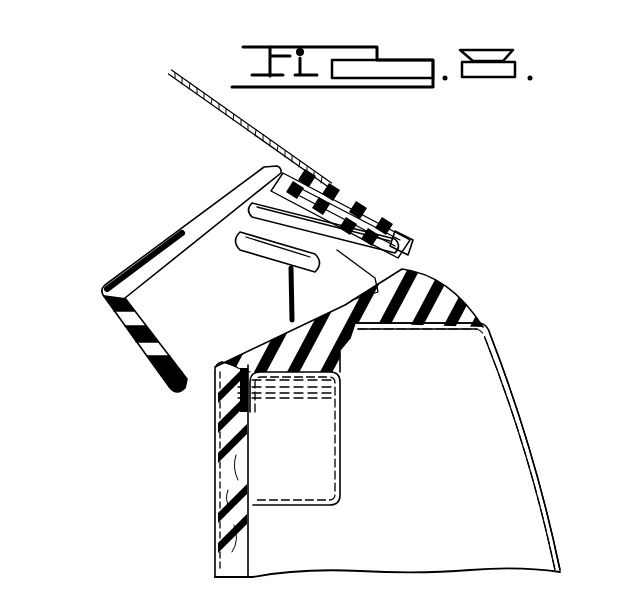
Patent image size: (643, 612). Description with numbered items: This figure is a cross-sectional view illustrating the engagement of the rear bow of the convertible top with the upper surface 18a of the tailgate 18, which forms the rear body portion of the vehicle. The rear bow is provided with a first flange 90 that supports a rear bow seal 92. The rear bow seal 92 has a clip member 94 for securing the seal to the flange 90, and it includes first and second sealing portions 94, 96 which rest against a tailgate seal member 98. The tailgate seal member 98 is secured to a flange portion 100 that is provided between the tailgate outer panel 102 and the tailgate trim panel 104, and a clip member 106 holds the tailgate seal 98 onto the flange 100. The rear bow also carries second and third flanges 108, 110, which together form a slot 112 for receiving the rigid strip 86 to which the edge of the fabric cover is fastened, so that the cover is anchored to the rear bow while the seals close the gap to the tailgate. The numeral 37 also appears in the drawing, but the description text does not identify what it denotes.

The tailgate 18 is at (537, 457).
The top portion of tailgate 18a is at (426, 338).
The cover plate 37 is at (206, 222).
The rigid plastic strip 86 is at (385, 220).
The first flange 90 is at (270, 268).
The rear bow seal 92 is at (283, 283).
The clip member 94 is at (427, 258).
The second sealing portion 96 is at (303, 307).
The tailgate seal member 98 is at (443, 284).
The flange portion 100 is at (257, 400).
The tailgate outer panel 102 is at (522, 406).
The tailgate trim panel 104 is at (238, 537).
The clip member 106 is at (230, 383).
The second flange 108 is at (312, 173).
The third flange 110 is at (343, 187).
The slot 112 is at (372, 208).